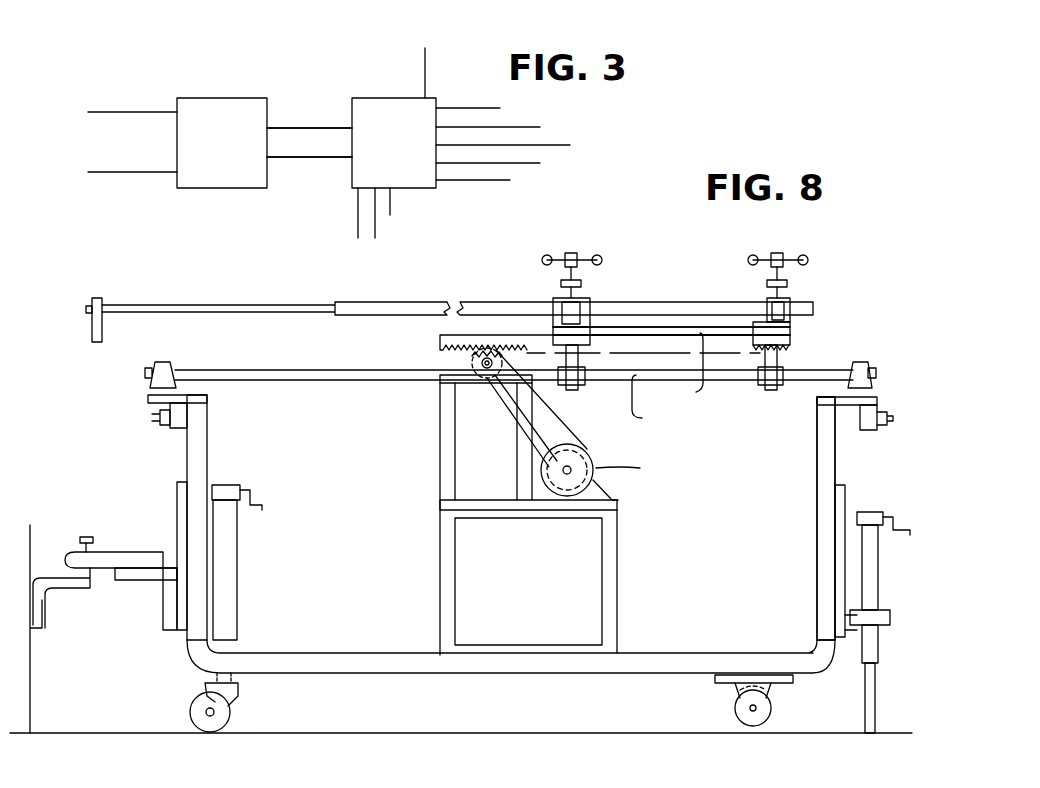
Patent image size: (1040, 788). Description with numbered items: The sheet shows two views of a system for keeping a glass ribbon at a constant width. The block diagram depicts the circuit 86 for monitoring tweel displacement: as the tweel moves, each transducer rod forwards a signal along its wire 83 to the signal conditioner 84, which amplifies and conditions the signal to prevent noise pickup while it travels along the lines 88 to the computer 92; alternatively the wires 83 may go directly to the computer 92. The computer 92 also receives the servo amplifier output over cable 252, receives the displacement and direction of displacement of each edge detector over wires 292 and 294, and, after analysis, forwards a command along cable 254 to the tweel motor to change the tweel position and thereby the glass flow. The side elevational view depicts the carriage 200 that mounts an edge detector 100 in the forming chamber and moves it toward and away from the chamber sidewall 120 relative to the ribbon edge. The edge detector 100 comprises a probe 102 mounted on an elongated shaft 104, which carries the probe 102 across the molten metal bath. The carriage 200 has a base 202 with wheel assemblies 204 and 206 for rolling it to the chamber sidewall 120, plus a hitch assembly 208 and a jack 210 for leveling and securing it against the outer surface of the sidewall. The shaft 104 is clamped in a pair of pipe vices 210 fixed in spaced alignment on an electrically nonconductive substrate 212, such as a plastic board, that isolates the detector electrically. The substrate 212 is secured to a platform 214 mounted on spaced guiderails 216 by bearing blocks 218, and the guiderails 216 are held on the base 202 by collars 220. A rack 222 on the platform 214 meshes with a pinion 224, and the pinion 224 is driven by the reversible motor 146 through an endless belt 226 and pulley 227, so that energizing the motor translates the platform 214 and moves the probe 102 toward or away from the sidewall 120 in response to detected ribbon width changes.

In FIG. 3, the wire 83 is at (112, 112).
In FIG. 3, the signal conditioner 84 is at (222, 104).
In FIG. 3, the circuit 86 is at (325, 100).
In FIG. 3, the lines 88 is at (294, 128).
In FIG. 3, the computer 92 is at (378, 92).
In FIG. 3, the cable 252 is at (572, 145).
In FIG. 8, the cable 252 is at (628, 468).
In FIG. 3, the cable 254 is at (540, 127).
In FIG. 3, the wire 292 is at (542, 163).
In FIG. 3, the wire 294 is at (510, 182).
In FIG. 8, the edge detector 100 is at (449, 293).
In FIG. 8, the probe 102 is at (104, 324).
In FIG. 8, the elongated shaft 104 is at (196, 305).
In FIG. 8, the chamber sidewall 120 is at (38, 660).
In FIG. 8, the reversible motor 146 is at (600, 455).
In FIG. 8, the carriage 200 is at (848, 478).
In FIG. 8, the base 202 is at (485, 682).
In FIG. 8, the wheel assembly 204 is at (242, 712).
In FIG. 8, the wheel assembly 206 is at (732, 708).
In FIG. 8, the hitch assembly 208 is at (93, 535).
In FIG. 8, the pipe vice 210 is at (585, 287).
In FIG. 8, the electrically nonconductive substrate 212 is at (768, 330).
In FIG. 8, the platform 214 is at (671, 364).
In FIG. 8, the guiderails 216 is at (671, 380).
In FIG. 8, the bearing blocks 218 is at (572, 388).
In FIG. 8, the collars 220 is at (167, 365).
In FIG. 8, the rack 222 is at (440, 338).
In FIG. 8, the pinion 224 is at (470, 363).
In FIG. 8, the endless belt 226 is at (503, 430).
In FIG. 8, the pulley 227 is at (590, 490).